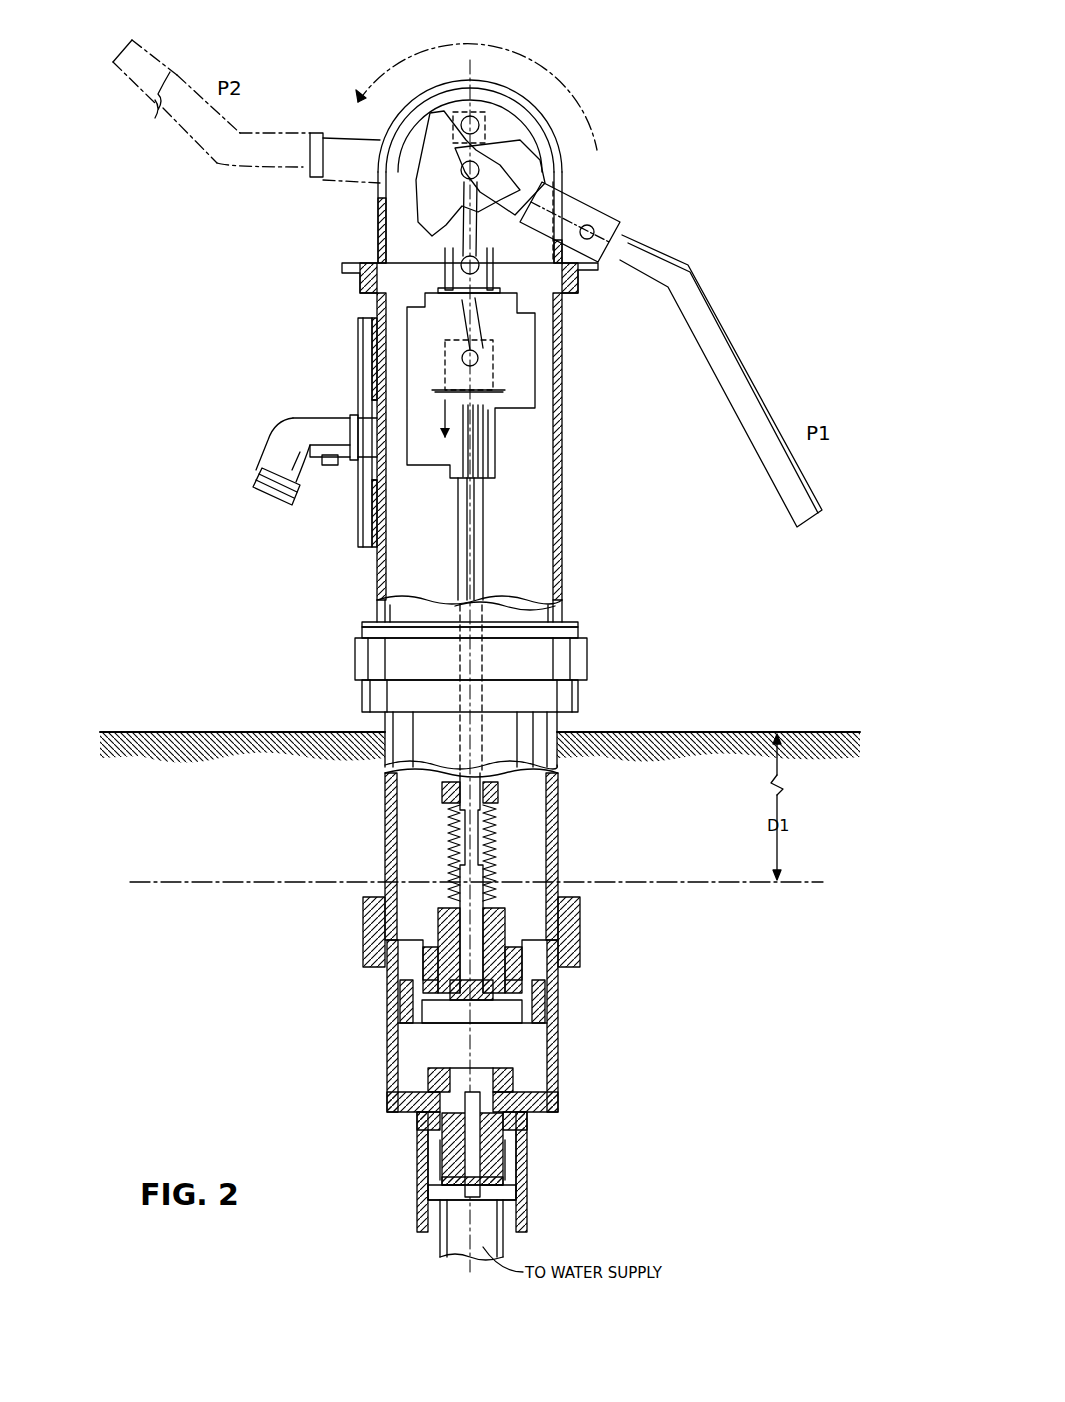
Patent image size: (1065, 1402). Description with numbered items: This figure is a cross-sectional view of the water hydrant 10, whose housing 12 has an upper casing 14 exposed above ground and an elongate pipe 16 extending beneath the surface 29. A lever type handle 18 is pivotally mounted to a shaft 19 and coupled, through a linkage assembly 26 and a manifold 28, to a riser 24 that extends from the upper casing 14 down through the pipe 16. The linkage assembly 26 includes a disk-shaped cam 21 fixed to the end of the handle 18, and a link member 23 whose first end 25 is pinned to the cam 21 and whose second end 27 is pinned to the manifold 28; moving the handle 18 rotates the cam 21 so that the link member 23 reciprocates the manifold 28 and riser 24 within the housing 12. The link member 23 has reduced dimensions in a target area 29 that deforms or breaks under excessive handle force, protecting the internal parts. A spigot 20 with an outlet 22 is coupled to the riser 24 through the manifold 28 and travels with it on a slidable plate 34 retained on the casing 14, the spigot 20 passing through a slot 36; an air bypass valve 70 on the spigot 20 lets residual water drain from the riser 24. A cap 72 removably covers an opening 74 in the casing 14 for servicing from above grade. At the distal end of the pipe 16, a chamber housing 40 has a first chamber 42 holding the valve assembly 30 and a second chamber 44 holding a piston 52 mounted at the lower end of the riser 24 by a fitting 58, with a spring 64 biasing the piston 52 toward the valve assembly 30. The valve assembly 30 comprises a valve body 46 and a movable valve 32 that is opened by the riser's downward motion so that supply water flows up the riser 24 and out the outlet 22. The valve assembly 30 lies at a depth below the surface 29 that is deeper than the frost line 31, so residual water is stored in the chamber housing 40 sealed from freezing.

The water hydrant 10 is at (192, 572).
The housing 12 is at (599, 657).
The upper casing 14 is at (565, 461).
The elongate pipe 16 is at (560, 822).
The handle 18 is at (195, 137).
The shaft 19 is at (462, 152).
The spigot 20 is at (283, 429).
The disk-shaped cam 21 is at (558, 176).
The outlet 22 is at (253, 490).
The link member 23 is at (492, 172).
The riser 24 is at (483, 540).
The first end 25 is at (474, 117).
The linkage assembly 26 is at (521, 114).
The second end 27 is at (452, 272).
The manifold 28 is at (538, 368).
The surface 29 is at (452, 200).
The valve assembly 30 is at (438, 1148).
The frost line 31 is at (693, 883).
The valve 32 is at (520, 1188).
The slidable plate 34 is at (358, 348).
The slot 36 is at (378, 492).
The chamber housing 40 is at (363, 948).
The first chamber 42 is at (437, 1188).
The second chamber 44 is at (435, 1058).
The valve body 46 is at (503, 1068).
The piston 52 is at (433, 912).
The fitting 58 is at (495, 790).
The spring 64 is at (498, 838).
The air bypass valve 70 is at (333, 466).
The cap 72 is at (380, 208).
The opening 74 is at (403, 267).